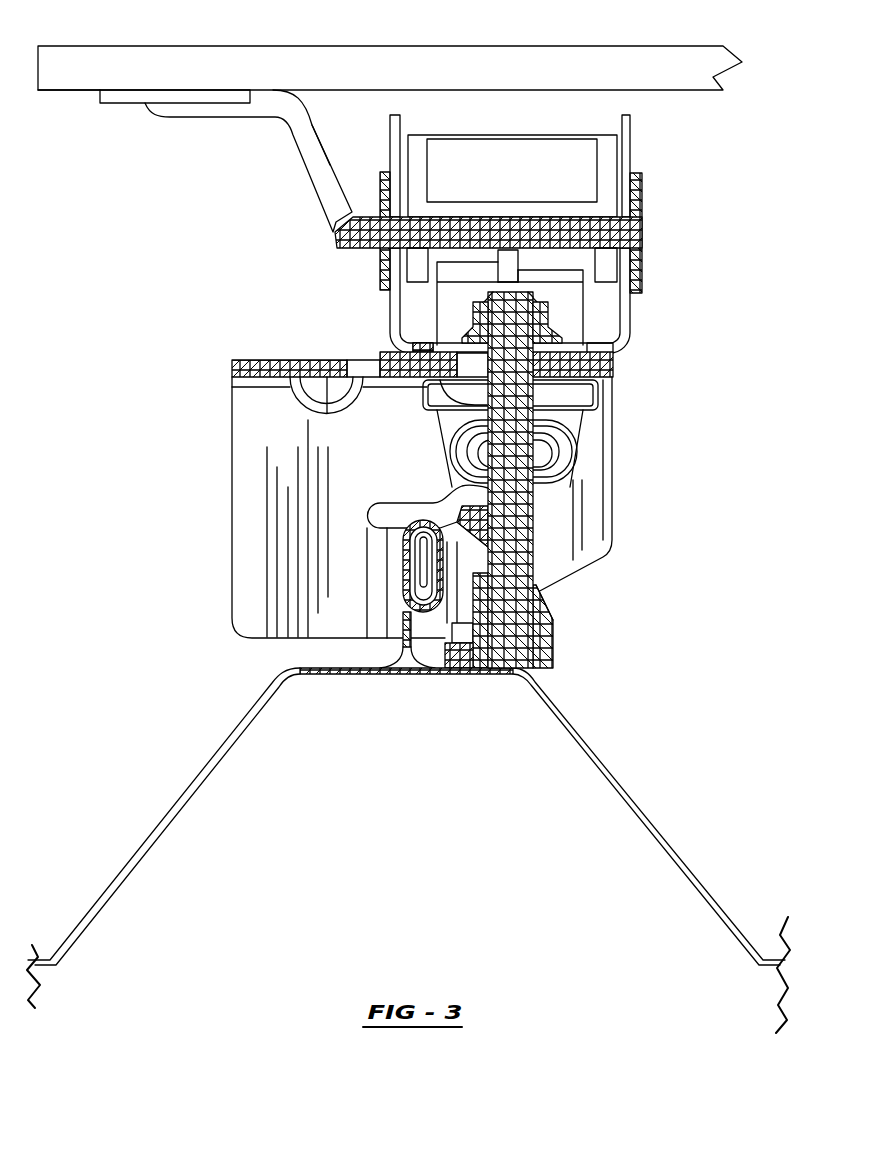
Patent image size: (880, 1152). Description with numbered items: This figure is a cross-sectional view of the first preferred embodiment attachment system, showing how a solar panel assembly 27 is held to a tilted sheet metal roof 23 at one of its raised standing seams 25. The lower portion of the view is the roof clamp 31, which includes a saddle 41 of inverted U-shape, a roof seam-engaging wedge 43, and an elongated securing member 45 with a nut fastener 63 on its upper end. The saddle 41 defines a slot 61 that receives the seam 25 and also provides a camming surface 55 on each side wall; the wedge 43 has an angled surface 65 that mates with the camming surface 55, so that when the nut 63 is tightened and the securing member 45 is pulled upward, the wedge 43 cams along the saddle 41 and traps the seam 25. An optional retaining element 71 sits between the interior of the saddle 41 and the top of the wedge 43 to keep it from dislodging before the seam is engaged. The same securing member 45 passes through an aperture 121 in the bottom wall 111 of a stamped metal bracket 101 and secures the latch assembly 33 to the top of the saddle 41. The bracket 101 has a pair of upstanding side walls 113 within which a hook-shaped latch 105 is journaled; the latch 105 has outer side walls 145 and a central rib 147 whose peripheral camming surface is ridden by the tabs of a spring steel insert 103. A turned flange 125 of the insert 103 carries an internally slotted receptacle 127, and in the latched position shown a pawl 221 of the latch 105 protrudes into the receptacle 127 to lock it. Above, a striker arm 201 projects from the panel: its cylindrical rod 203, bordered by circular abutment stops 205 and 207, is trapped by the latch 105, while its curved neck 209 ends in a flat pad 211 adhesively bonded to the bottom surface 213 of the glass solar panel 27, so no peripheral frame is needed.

The roof 23 is at (167, 822).
The standing seam 25 is at (417, 557).
The solar panel assembly 27 is at (405, 79).
The roof clamp 31 is at (633, 478).
The latch assembly 33 is at (653, 307).
The saddle 41 is at (265, 418).
The roof seam-engaging wedge 43 is at (462, 657).
The securing member 45 is at (523, 510).
The camming surface 55 is at (542, 592).
The slot 61 is at (415, 587).
The nut fastener 63 is at (552, 313).
The angled surface 65 is at (550, 612).
The retaining element 71 is at (595, 397).
The bracket 101 is at (627, 127).
The spring steel insert 103 is at (430, 342).
The latch 105 is at (607, 173).
The bottom wall 111 is at (367, 370).
The side wall 113 is at (398, 130).
The aperture 121 is at (613, 367).
The turned flange 125 is at (560, 268).
The slotted receptacle 127 is at (518, 275).
The side wall 145 is at (422, 155).
The central rib 147 is at (512, 260).
The striker arm 201 is at (307, 153).
The rod 203 is at (477, 230).
The abutment stop 205 is at (637, 193).
The abutment stop 207 is at (380, 267).
The curved neck 209 is at (307, 193).
The pad 211 is at (175, 97).
The bottom surface 213 is at (80, 90).
The pawl 221 is at (507, 282).